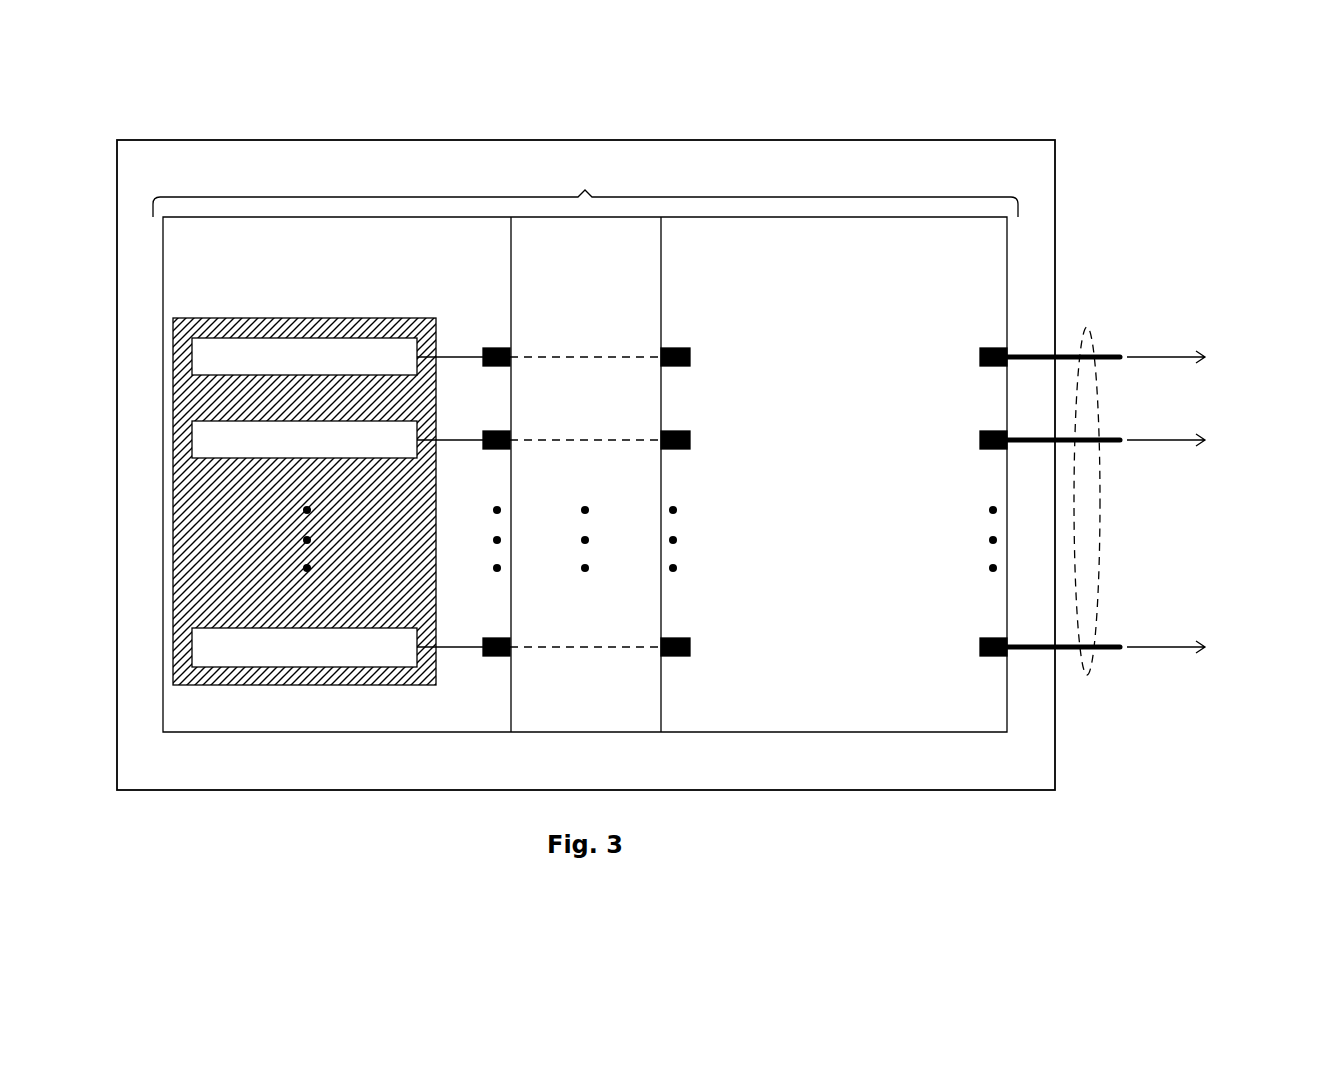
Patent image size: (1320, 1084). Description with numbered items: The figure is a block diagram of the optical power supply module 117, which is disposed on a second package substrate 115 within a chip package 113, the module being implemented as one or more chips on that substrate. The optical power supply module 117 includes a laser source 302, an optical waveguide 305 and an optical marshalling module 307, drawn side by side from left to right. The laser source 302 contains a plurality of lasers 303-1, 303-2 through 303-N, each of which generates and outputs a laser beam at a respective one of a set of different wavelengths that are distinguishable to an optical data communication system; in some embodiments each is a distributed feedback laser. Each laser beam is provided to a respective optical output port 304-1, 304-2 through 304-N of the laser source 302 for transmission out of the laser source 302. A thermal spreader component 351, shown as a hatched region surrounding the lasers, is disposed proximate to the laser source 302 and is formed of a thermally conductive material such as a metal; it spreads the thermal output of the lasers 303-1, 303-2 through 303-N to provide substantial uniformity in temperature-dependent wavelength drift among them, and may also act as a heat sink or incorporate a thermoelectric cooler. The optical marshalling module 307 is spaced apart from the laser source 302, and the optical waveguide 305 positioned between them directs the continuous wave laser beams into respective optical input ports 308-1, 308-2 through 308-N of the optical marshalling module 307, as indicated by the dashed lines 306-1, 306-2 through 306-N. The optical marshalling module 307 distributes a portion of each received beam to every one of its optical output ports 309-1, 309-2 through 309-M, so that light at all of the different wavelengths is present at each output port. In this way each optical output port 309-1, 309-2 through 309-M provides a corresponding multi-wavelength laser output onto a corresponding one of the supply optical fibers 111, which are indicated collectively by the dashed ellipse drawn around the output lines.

The supply optical fibers 111 is at (1093, 342).
The chip package 113 is at (1055, 218).
The second package substrate 115 is at (586, 465).
The optical power supply module 117 is at (585, 191).
The laser source 302 is at (337, 474).
The laser 303-1 is at (337, 356).
The laser 303-2 is at (337, 439).
The laser 303-N is at (337, 647).
The optical output port 304-1 is at (489, 347).
The optical output port 304-2 is at (489, 430).
The optical output port 304-N is at (489, 637).
The optical waveguide 305 is at (586, 474).
The line 306-1 is at (548, 353).
The line 306-2 is at (548, 441).
The line 306-N is at (548, 648).
The optical marshalling module 307 is at (834, 474).
The optical input port 308-1 is at (674, 347).
The optical input port 308-2 is at (674, 431).
The optical input port 308-N is at (674, 638).
The optical output port 309-1 is at (991, 347).
The optical output port 309-2 is at (991, 430).
The optical output port 309-M is at (991, 637).
The thermal spreader component 351 is at (257, 330).